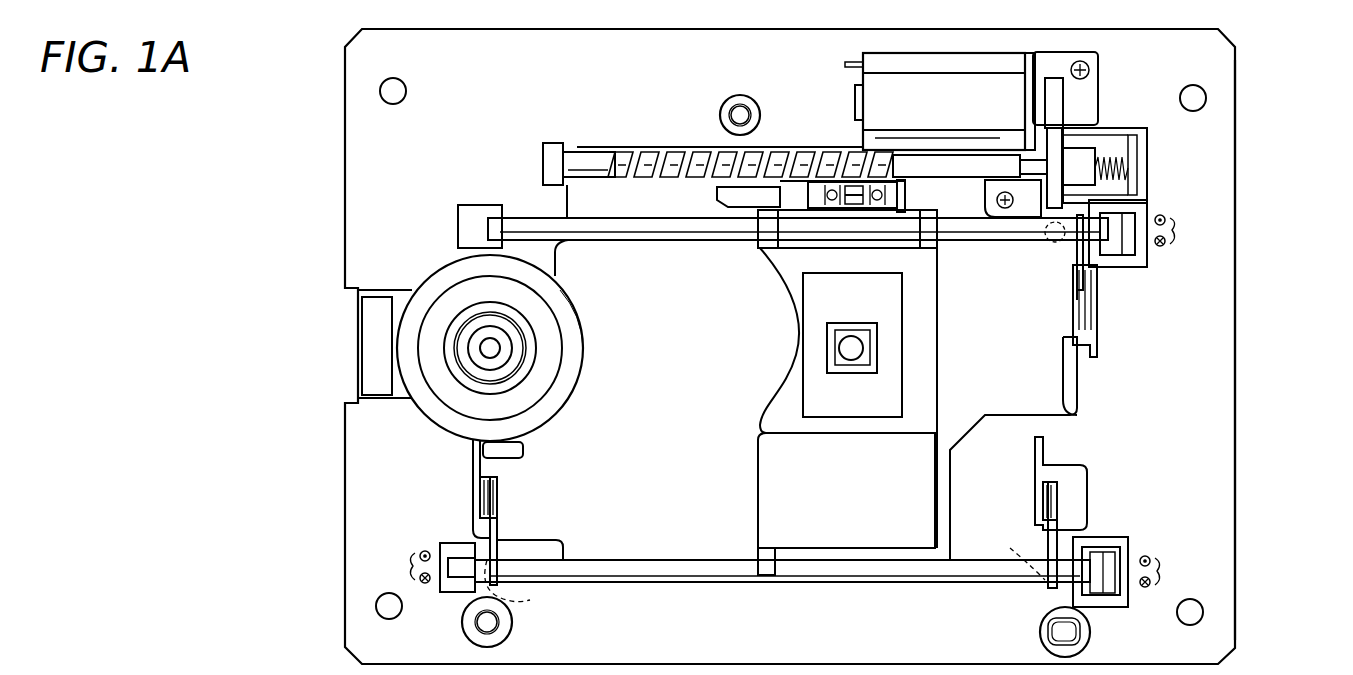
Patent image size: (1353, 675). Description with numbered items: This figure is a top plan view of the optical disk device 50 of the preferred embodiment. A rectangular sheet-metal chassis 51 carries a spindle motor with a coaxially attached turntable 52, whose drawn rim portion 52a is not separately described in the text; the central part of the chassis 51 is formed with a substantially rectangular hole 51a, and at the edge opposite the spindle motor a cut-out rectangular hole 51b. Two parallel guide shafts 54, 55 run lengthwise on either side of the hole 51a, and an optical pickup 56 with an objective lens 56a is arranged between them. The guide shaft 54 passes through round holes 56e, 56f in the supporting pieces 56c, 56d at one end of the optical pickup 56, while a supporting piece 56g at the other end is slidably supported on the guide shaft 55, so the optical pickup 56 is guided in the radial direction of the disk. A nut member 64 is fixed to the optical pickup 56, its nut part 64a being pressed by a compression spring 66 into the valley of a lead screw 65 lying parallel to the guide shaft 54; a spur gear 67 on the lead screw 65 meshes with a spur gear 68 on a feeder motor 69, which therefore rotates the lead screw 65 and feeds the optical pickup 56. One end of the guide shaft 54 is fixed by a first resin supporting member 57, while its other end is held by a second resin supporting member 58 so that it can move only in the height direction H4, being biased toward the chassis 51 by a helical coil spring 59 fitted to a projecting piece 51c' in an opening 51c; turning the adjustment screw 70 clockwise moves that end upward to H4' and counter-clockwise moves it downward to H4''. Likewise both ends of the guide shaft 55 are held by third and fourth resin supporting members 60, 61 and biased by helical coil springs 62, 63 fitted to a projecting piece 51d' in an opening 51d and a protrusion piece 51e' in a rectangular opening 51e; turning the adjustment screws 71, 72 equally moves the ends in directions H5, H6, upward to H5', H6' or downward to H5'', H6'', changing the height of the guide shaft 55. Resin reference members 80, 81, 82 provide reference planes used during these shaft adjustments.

The optical disk device 50 is at (1328, 63).
The chassis 51 is at (1237, 300).
The rectangular hole 51a is at (636, 520).
The rectangular-shaped hole 51b is at (1070, 371).
The opening 51c is at (1010, 315).
The projecting piece 51c' is at (1052, 315).
The opening 51d is at (551, 475).
The projecting piece 51d' is at (546, 497).
The rectangular-shaped opening 51e is at (1109, 483).
The protrusion piece 51e' is at (1103, 500).
The turntable 52 is at (590, 352).
The turntable rim 52a is at (572, 330).
The guide shaft 54 is at (630, 241).
The guide shaft 55 is at (704, 560).
The optical pickup 56 is at (756, 463).
The objective lens 56a is at (845, 348).
The supporting piece 56c is at (758, 244).
The supporting piece 56d is at (925, 244).
The round hole 56e is at (768, 224).
The round hole 56f is at (945, 214).
The supporting piece 56g is at (768, 577).
The first resin supporting member 57 is at (487, 203).
The second resin supporting member 58 is at (1137, 268).
The helical coil spring 59 is at (1073, 273).
The third resin supporting member 60 is at (446, 543).
The fourth resin supporting member 61 is at (1132, 542).
The helical coil spring 62 is at (502, 524).
The helical coil spring 63 is at (1046, 545).
The nut member 64 is at (818, 182).
The nut part 64a is at (855, 188).
The lead screw 65 is at (598, 160).
The compression spring 66 is at (868, 212).
The spur gear 67 is at (1052, 158).
The spur gear 68 is at (1060, 96).
The feeder motor 69 is at (872, 80).
The adjustment screw 70 is at (1042, 238).
The adjustment screw 71 is at (528, 591).
The adjustment screw 72 is at (1006, 551).
The resin reference member 80 is at (722, 103).
The resin reference member 81 is at (515, 624).
The resin reference member 82 is at (1040, 632).
The direction of movement of guide shaft 54 H4 is at (1193, 231).
The upward direction H4' is at (1177, 177).
The downward direction H4'' is at (1184, 274).
The direction of movement of guide shaft 55 end H5 is at (391, 568).
The upward direction H5' is at (393, 522).
The downward direction H5'' is at (442, 614).
The direction of movement of guide shaft 55 end H6 is at (1177, 573).
The upward direction H6' is at (1187, 549).
The downward direction H6'' is at (1167, 616).